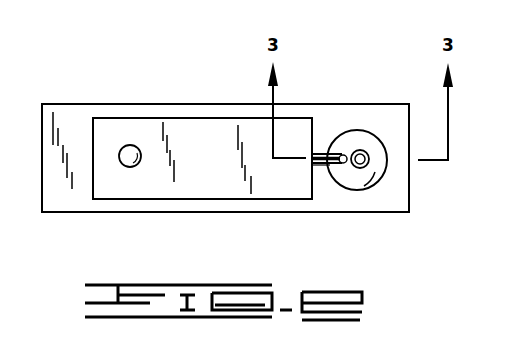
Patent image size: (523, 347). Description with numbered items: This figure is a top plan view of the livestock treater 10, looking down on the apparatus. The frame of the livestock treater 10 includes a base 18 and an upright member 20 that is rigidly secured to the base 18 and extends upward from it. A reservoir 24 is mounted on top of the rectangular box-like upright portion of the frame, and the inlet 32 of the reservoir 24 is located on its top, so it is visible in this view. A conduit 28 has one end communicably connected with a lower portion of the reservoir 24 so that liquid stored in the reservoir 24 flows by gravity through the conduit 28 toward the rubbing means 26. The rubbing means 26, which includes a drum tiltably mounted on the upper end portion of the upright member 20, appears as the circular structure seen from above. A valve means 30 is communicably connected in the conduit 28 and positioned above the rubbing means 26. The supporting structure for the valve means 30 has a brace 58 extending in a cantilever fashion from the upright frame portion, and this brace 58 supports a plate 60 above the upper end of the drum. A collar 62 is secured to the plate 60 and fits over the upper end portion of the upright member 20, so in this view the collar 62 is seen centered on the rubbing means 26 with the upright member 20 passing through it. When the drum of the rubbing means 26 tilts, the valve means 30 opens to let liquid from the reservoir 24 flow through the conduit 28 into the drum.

The livestock treater 10 is at (118, 86).
The base 18 is at (213, 110).
The upright member 20 is at (369, 158).
The reservoir 24 is at (227, 183).
The rubbing means 26 is at (389, 180).
The conduit 28 is at (334, 150).
The valve means 30 is at (352, 143).
The inlet 32 is at (131, 154).
The brace 58 is at (319, 165).
The plate 60 is at (370, 143).
The collar 62 is at (366, 156).